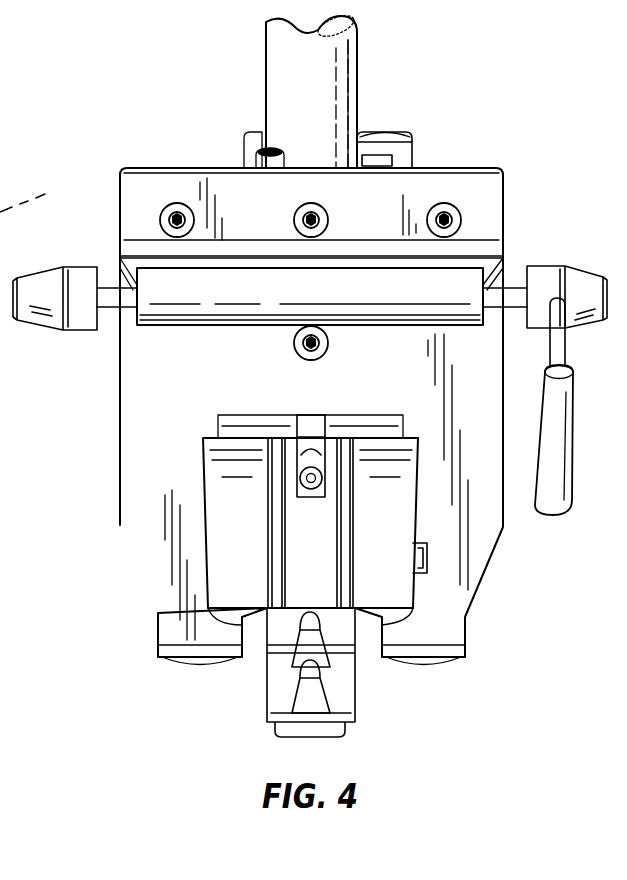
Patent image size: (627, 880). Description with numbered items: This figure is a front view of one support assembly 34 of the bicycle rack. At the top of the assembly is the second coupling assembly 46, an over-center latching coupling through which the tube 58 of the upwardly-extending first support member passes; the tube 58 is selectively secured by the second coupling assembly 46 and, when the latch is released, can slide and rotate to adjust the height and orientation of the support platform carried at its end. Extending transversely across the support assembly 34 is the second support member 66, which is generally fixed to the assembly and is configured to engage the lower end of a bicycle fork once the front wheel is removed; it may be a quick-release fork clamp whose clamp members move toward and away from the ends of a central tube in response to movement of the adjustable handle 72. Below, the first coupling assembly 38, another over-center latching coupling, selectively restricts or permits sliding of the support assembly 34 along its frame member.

The support assembly 34 is at (485, 195).
The second coupling assembly 46 is at (345, 80).
The tube 58 is at (410, 146).
The second support member 66 is at (194, 282).
The adjustable handle 72 is at (557, 503).
The first coupling assembly 38 is at (390, 515).